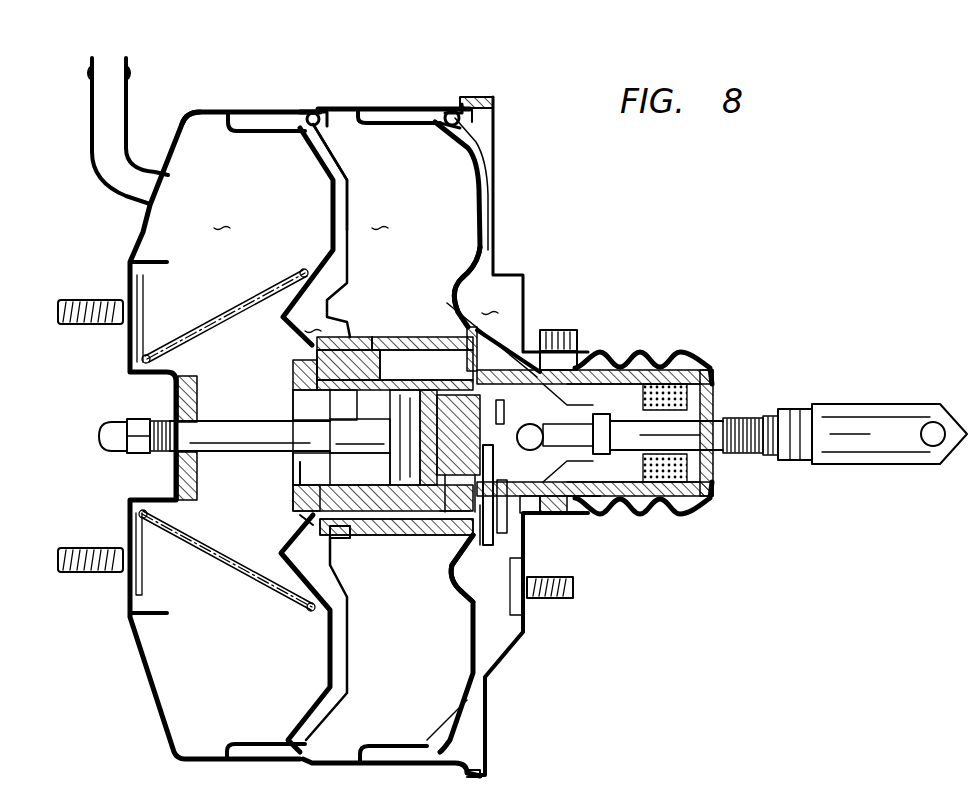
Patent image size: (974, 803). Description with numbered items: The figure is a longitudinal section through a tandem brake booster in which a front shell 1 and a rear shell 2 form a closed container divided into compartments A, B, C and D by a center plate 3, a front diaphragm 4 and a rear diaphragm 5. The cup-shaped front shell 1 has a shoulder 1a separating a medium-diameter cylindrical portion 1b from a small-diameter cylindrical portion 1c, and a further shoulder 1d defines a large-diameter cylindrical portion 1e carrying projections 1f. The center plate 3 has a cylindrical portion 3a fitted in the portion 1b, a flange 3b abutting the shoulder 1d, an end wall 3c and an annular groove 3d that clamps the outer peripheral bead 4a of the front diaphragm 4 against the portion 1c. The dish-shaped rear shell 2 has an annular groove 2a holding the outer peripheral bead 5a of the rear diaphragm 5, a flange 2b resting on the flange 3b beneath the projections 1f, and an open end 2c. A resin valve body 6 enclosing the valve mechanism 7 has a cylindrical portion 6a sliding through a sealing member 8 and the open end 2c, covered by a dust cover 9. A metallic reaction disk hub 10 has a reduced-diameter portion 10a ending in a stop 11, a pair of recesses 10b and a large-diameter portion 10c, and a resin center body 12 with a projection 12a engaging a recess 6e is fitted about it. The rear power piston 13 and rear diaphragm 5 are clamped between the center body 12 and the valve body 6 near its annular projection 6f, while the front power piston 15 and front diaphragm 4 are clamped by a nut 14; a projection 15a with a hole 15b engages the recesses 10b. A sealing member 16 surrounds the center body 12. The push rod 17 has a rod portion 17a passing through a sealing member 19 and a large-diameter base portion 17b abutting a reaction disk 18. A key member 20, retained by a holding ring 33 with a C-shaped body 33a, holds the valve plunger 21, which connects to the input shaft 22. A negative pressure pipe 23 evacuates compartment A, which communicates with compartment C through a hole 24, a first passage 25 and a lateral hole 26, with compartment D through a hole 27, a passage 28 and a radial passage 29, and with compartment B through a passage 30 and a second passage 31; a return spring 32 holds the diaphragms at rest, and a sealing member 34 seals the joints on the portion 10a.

The front shell 1 is at (223, 110).
The shoulder 1a is at (314, 108).
The medium-diameter cylindrical portion 1b is at (388, 108).
The small-diameter cylindrical portion 1c is at (200, 110).
The shoulder 1d is at (460, 100).
The large-diameter cylindrical portion 1e is at (482, 775).
The projections 1f is at (493, 98).
The rear shell 2 is at (490, 168).
The annular groove 2a is at (447, 110).
The flange 2b is at (474, 118).
The open end 2c is at (621, 355).
The center plate 3 is at (356, 167).
The cylindrical portion 3a is at (329, 122).
The flange 3b is at (472, 102).
The end wall 3c is at (352, 240).
The annular groove 3d is at (309, 113).
The front diaphragm 4 is at (236, 136).
The outer peripheral bead 4a is at (288, 128).
The rear diaphragm 5 is at (400, 142).
The outer peripheral bead 5a is at (462, 128).
The valve body 6 is at (690, 507).
The cylindrical portion 6a is at (612, 512).
The engaging recess 6e is at (478, 545).
The annular projection 6f is at (475, 403).
The valve mechanism 7 is at (565, 348).
The sealing member 8 is at (585, 500).
The dust cover 9 is at (662, 520).
The reaction disk hub 10 is at (294, 382).
The reduced-diameter portion 10a is at (420, 535).
The recesses 10b is at (302, 485).
The large-diameter portion 10c is at (398, 368).
The stop 11 is at (544, 515).
The center body 12 is at (407, 321).
The projection 12a is at (468, 532).
The rear power piston 13 is at (474, 207).
The nut 14 is at (300, 472).
The front power piston 15 is at (328, 207).
The projection 15a is at (308, 468).
The hole 15b is at (316, 450).
The sealing member 16 is at (294, 320).
The push rod 17 is at (227, 466).
The rod portion 17a is at (215, 421).
The large-diameter base portion 17b is at (408, 393).
The reaction disk 18 is at (416, 464).
The sealing member 19 is at (178, 470).
The key member 20 is at (524, 546).
The valve plunger 21 is at (470, 405).
The input shaft 22 is at (720, 441).
The negative pressure pipe 23 is at (90, 152).
The hole 24 is at (342, 393).
The first passage 25 is at (374, 336).
The lateral hole 26 is at (460, 325).
The hole 27 is at (507, 330).
The passage 28 is at (540, 330).
The radial passage 29 is at (565, 513).
The passage 30 is at (481, 543).
The second passage 31 is at (312, 527).
The return spring 32 is at (235, 580).
The holding ring 33 is at (504, 545).
The C-shaped body 33a is at (503, 328).
The sealing member 34 is at (448, 530).
The compartment A is at (222, 217).
The compartment B is at (313, 320).
The compartment C is at (380, 217).
The compartment D is at (490, 302).